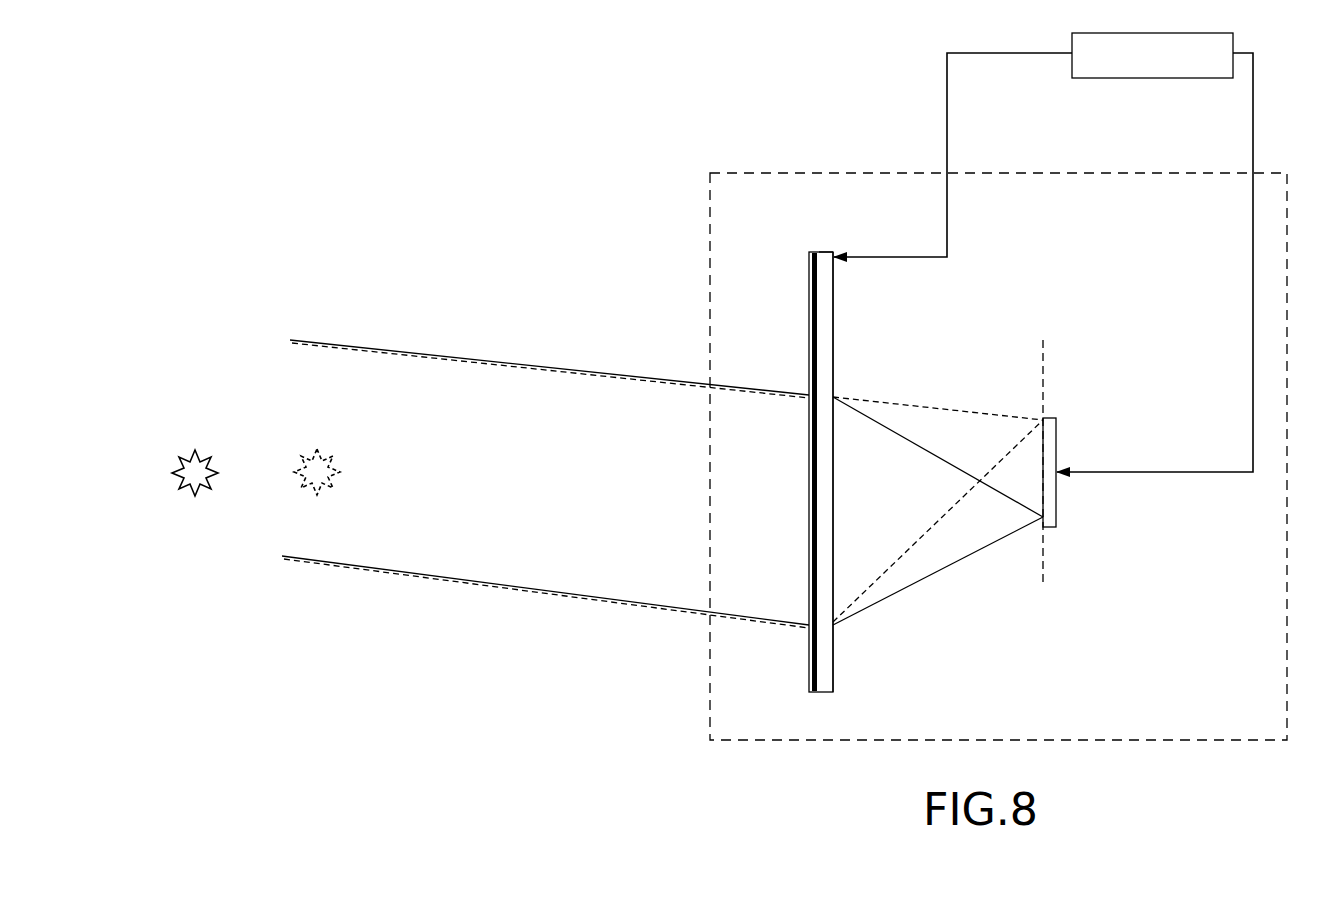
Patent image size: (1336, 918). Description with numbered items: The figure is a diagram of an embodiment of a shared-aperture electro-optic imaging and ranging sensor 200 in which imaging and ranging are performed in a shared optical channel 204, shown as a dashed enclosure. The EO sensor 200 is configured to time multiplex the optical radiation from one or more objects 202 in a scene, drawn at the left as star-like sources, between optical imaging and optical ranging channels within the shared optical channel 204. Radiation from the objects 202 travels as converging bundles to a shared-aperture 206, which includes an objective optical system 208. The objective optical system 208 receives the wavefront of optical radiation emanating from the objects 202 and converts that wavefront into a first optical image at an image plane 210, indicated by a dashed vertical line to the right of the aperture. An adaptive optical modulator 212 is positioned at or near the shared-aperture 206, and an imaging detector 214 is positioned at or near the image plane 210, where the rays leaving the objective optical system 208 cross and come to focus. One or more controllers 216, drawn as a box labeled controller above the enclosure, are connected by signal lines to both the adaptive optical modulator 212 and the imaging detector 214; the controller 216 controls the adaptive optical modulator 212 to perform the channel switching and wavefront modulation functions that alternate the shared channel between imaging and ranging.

The shared-aperture electro-optic imaging and ranging sensor 200 is at (410, 205).
The objects 202 is at (316, 450).
The shared optical channel 204 is at (710, 283).
The shared-aperture 206 is at (808, 708).
The objective optical system 208 is at (808, 510).
The image plane 210 is at (1043, 340).
The adaptive optical modulator 212 is at (819, 252).
The imaging detector 214 is at (1056, 498).
The controller 216 is at (1135, 80).